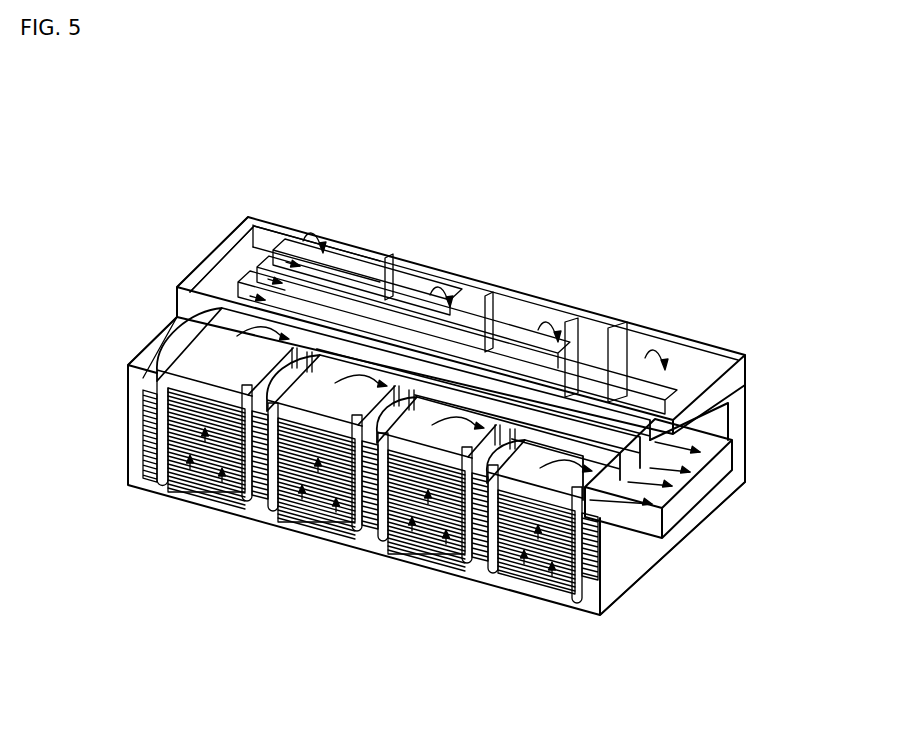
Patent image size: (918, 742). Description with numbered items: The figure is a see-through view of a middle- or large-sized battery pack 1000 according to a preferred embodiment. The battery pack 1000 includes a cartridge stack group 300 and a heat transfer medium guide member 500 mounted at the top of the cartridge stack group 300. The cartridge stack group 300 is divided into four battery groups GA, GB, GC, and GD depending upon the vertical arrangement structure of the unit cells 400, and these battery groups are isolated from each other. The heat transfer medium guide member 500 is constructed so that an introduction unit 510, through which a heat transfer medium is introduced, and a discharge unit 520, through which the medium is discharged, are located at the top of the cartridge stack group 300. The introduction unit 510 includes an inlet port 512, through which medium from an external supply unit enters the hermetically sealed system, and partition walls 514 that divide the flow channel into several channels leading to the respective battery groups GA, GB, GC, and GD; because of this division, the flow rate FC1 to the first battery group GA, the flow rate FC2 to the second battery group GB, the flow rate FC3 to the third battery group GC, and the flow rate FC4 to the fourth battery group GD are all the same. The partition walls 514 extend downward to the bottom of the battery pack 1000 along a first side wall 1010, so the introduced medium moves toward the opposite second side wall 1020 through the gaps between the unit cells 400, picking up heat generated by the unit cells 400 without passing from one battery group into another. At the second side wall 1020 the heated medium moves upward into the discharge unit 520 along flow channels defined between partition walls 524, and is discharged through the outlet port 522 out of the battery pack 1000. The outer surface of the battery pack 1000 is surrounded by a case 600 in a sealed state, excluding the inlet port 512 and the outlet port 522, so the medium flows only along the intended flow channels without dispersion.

The battery pack 1000 is at (104, 104).
The second side wall 1020 is at (580, 603).
The first side wall 1010 is at (745, 423).
The case 600 is at (657, 548).
The heat transfer medium guide member 500 is at (128, 366).
The introduction unit 510 is at (567, 294).
The inlet port 512 is at (247, 220).
The partition walls 514 is at (642, 338).
The discharge unit 520 is at (455, 368).
The outlet port 522 is at (742, 490).
The partition walls 524 is at (159, 350).
The cartridge stack group 300 is at (131, 427).
The unit cells 400 is at (582, 603).
The flow rate FC1 is at (252, 229).
The flow rate FC2 is at (270, 252).
The flow rate FC3 is at (256, 269).
The flow rate FC4 is at (237, 284).
The first battery group GA is at (200, 492).
The second battery group GB is at (313, 520).
The third battery group GC is at (422, 558).
The fourth battery group GD is at (533, 577).